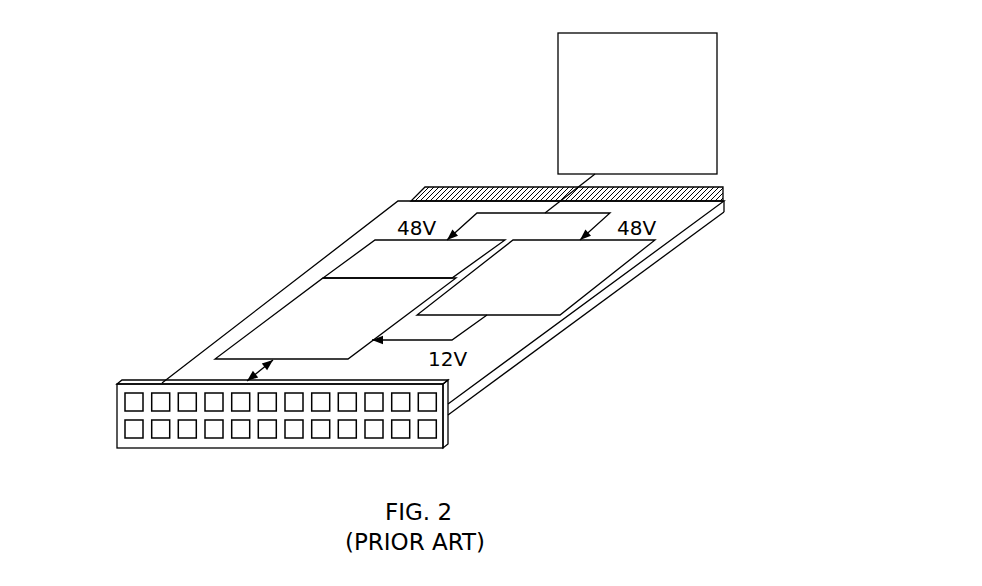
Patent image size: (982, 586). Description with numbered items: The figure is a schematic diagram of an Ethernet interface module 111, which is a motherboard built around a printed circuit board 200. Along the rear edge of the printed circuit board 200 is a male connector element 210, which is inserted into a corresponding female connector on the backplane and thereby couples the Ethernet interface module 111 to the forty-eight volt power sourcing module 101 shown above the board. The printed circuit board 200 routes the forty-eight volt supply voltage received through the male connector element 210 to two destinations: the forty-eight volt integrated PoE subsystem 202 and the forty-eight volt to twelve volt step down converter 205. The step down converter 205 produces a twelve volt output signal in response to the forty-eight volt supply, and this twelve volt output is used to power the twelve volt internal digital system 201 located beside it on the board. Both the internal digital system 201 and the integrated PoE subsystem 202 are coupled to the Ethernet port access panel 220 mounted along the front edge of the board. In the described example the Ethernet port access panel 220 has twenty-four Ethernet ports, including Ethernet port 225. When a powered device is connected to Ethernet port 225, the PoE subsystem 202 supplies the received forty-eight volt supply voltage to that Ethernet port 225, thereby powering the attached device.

The 48-Volt power sourcing module 101 is at (568, 85).
The Ethernet interface module 111 is at (240, 297).
The printed circuit board 200 is at (428, 308).
The 12-Volt internal digital system 201 is at (330, 346).
The 48-Volt integrated PoE subsystem 202 is at (430, 266).
The 48-Volt to 12-Volt step down converter 205 is at (536, 303).
The male connector element 210 is at (723, 192).
The Ethernet port access panel 220 is at (293, 433).
The Ethernet port 225 is at (135, 428).